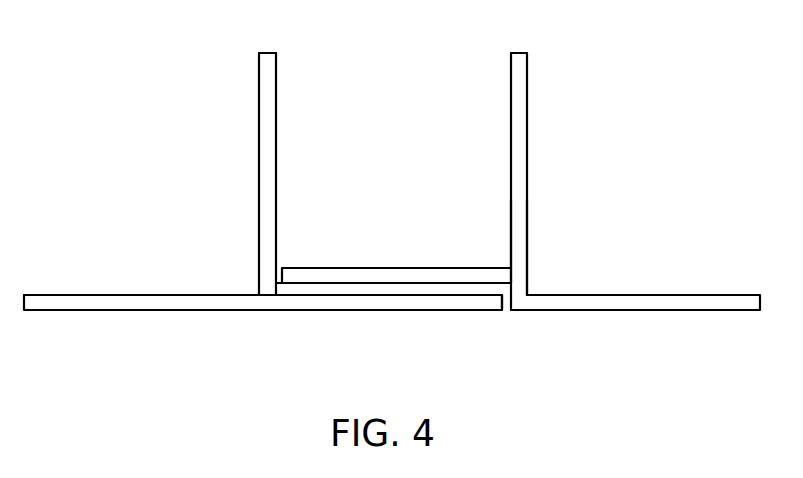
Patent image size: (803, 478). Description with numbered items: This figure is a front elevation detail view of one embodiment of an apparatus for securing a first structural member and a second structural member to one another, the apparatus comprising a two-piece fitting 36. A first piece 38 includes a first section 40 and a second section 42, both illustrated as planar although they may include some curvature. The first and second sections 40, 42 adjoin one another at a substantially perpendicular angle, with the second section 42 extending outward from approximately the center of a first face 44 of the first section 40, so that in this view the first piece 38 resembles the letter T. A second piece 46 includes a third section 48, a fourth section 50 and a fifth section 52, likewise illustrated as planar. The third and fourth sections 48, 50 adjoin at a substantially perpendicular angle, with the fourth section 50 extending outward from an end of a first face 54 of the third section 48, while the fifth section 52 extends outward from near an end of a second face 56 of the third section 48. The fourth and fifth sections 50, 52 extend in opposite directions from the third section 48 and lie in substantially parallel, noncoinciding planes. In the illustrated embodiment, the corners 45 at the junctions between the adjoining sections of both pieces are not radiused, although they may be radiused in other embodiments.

The two-piece fitting 36 is at (658, 169).
The first piece 38 is at (270, 177).
The first section 40 is at (265, 90).
The second section 42 is at (138, 300).
The first face 44 is at (82, 295).
The corners 45 is at (258, 293).
The second piece 46 is at (518, 178).
The third section 48 is at (520, 95).
The fourth section 50 is at (690, 302).
The fifth section 52 is at (365, 272).
The first face 54 is at (528, 238).
The second face 56 is at (510, 225).